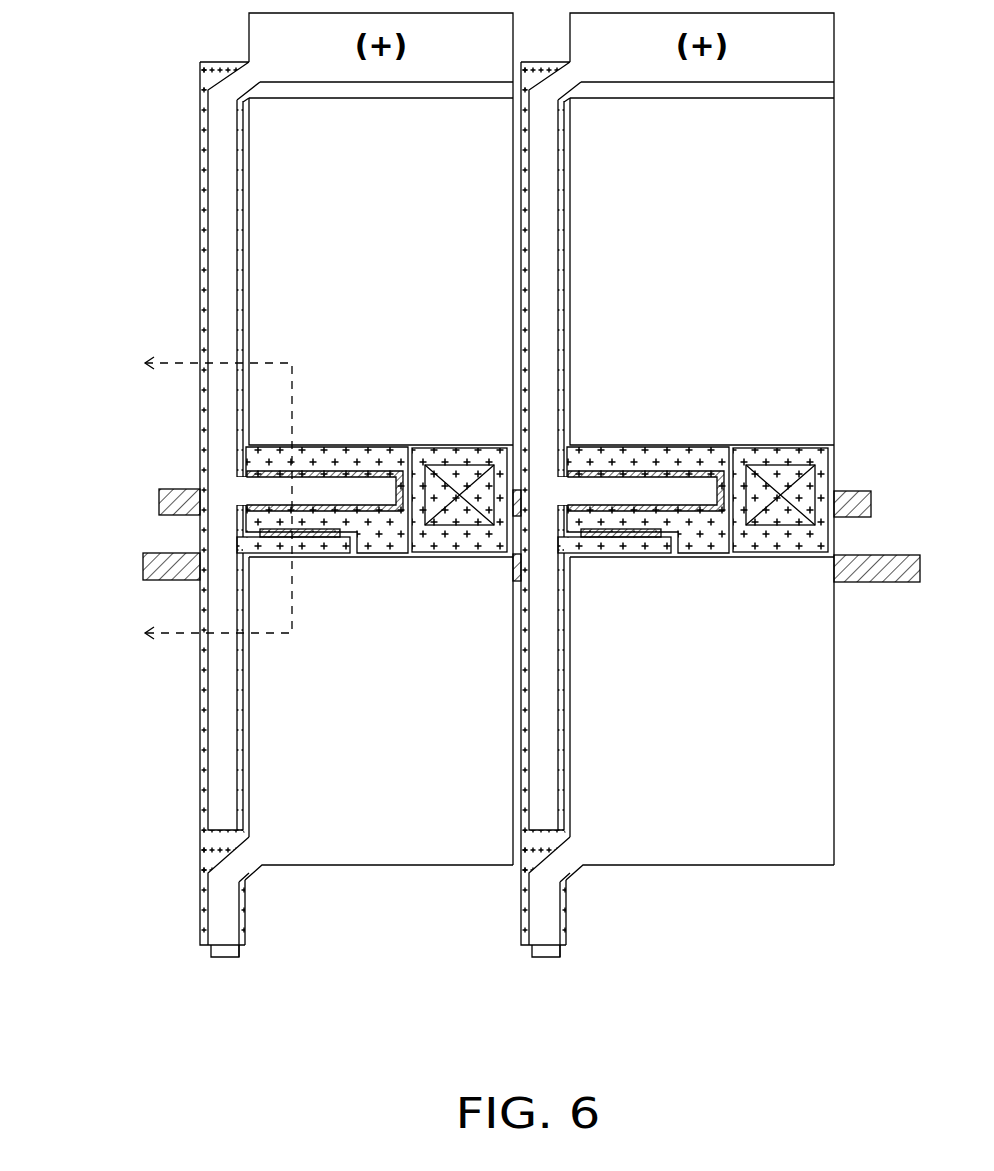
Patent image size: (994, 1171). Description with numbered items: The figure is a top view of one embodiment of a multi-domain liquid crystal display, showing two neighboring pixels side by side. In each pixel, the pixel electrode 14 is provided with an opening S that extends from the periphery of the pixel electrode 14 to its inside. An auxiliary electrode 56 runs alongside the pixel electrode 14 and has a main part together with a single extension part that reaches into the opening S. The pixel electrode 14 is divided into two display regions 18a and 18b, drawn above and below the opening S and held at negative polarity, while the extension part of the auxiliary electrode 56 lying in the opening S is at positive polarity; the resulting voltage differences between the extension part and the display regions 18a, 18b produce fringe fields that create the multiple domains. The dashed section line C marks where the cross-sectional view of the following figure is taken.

The pixel electrode 14 is at (250, 200).
The display region 18a is at (275, 173).
The display region 18b is at (272, 710).
The auxiliary electrode 56 is at (227, 303).
The opening S is at (383, 443).
The line C-C' C is at (199, 498).